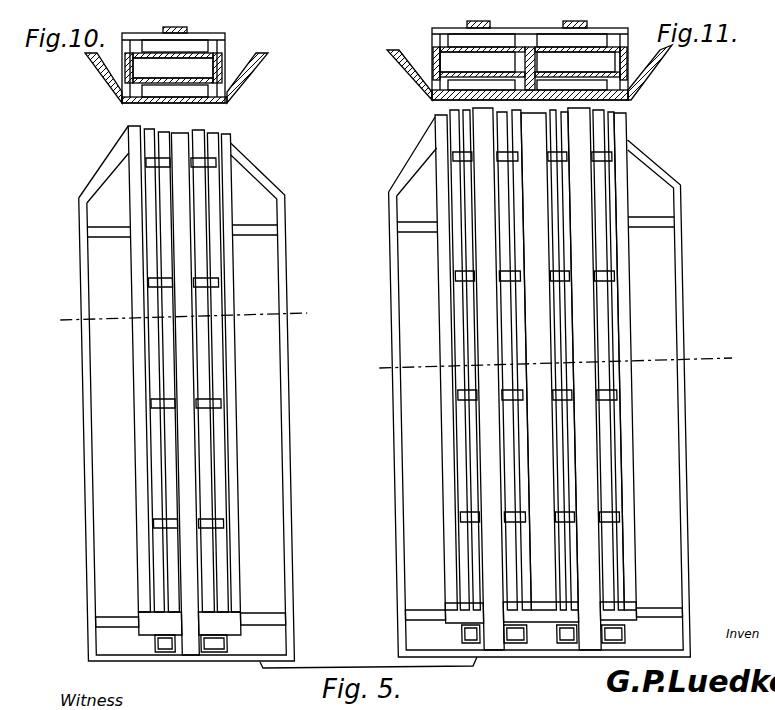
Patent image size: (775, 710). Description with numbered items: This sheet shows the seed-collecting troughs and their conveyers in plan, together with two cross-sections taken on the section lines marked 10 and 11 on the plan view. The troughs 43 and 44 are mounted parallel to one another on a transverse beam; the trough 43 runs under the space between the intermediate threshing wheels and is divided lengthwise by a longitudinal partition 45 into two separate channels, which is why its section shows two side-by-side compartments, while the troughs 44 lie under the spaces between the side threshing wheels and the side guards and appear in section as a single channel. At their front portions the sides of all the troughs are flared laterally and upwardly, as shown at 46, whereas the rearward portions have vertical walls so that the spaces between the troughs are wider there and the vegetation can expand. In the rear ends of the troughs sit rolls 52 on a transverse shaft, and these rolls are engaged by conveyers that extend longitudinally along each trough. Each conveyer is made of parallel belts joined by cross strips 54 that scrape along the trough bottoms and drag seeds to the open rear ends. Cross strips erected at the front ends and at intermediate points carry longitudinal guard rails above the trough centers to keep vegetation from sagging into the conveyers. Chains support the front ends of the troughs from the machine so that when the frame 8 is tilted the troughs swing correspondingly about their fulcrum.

In FIG. 11, the frame 8 is at (622, 7).
In FIG. 5, the section line 10— 10 is at (188, 318).
In FIG. 5, the section line 11— 11 is at (559, 362).
In FIG. 11, the trough 43 is at (498, 103).
In FIG. 10, the troughs 44 is at (208, 105).
In FIG. 11, the longitudinal partition 45 is at (548, 45).
In FIG. 10, the flared trough sides 46 is at (195, 78).
In FIG. 11, the flared trough sides 46 is at (520, 72).
In FIG. 10, the rolls 52 is at (201, 63).
In FIG. 11, the rolls 52 is at (510, 56).
In FIG. 10, the cross strips 54 is at (156, 59).
In FIG. 11, the cross strips 54 is at (555, 52).